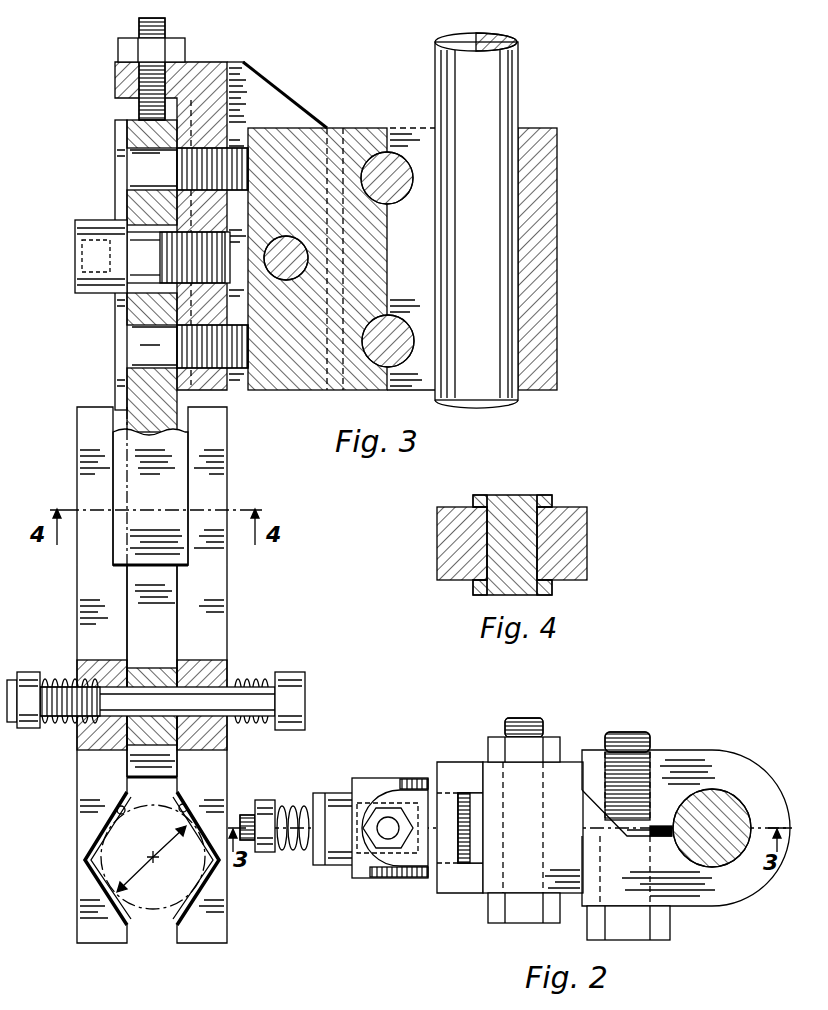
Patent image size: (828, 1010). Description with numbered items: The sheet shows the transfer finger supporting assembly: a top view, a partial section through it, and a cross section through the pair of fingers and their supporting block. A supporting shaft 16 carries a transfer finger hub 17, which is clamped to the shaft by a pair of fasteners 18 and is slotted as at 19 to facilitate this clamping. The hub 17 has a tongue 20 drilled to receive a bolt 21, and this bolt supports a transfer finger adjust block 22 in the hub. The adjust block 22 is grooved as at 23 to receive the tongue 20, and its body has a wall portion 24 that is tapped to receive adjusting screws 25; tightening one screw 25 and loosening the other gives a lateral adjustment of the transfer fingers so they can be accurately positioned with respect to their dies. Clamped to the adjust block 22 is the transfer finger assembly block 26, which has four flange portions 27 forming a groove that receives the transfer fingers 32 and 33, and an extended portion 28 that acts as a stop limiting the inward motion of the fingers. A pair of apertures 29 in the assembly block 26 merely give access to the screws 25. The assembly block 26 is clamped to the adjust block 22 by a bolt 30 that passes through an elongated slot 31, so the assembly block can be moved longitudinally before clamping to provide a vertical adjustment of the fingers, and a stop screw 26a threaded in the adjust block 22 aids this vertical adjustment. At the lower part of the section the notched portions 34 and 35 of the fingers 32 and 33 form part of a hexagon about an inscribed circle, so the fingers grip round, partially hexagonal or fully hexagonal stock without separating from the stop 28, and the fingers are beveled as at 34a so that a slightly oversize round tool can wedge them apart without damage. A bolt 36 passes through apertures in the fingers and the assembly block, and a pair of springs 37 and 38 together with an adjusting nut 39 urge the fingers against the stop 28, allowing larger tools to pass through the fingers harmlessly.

In FIG. 3, the supporting shaft 16 is at (487, 80).
In FIG. 2, the supporting shaft 16 is at (718, 806).
In FIG. 3, the transfer finger hub 17 is at (372, 128).
In FIG. 2, the transfer finger hub 17 is at (693, 767).
In FIG. 3, the fasteners 18 is at (388, 316).
In FIG. 2, the fasteners 18 is at (637, 733).
In FIG. 3, the slot 19 is at (400, 140).
In FIG. 2, the slot 19 is at (572, 795).
In FIG. 3, the tongue 20 is at (290, 160).
In FIG. 2, the tongue 20 is at (540, 840).
In FIG. 3, the bolt 21 is at (306, 218).
In FIG. 2, the bolt 21 is at (523, 736).
In FIG. 3, the transfer finger adjust block 22 is at (196, 64).
In FIG. 2, the transfer finger adjust block 22 is at (450, 858).
In FIG. 3, the groove 23 is at (252, 77).
In FIG. 2, the groove 23 is at (447, 790).
In FIG. 3, the wall portion 24 is at (238, 113).
In FIG. 3, the adjusting screws 25 is at (205, 172).
In FIG. 2, the adjusting screws 25 is at (475, 858).
In FIG. 3, the transfer finger assembly block 26 is at (135, 137).
In FIG. 4, the transfer finger assembly block 26 is at (512, 512).
In FIG. 2, the transfer finger assembly block 26 is at (383, 758).
In FIG. 3, the stop screw 26a is at (139, 78).
In FIG. 2, the stop screw 26a is at (387, 822).
In FIG. 4, the flange portions 27 is at (478, 503).
In FIG. 3, the extended portion 28 is at (160, 607).
In FIG. 3, the apertures 29 is at (147, 152).
In FIG. 3, the bolt 30 is at (173, 262).
In FIG. 2, the bolt 30 is at (337, 845).
In FIG. 3, the elongated slot 31 is at (120, 208).
In FIG. 3, the transfer finger 32 is at (98, 437).
In FIG. 4, the transfer finger 32 is at (465, 525).
In FIG. 3, the transfer finger 33 is at (205, 437).
In FIG. 4, the transfer finger 33 is at (570, 525).
In FIG. 3, the notched portion 34 is at (117, 810).
In FIG. 3, the beveled edge 34a is at (97, 882).
In FIG. 3, the notched portion 35 is at (185, 808).
In FIG. 3, the bolt 36 is at (292, 676).
In FIG. 2, the bolt 36 is at (312, 795).
In FIG. 3, the spring 37 is at (240, 681).
In FIG. 3, the spring 38 is at (55, 681).
In FIG. 2, the spring 38 is at (294, 850).
In FIG. 3, the adjusting nut 39 is at (30, 730).
In FIG. 2, the adjusting nut 39 is at (267, 853).